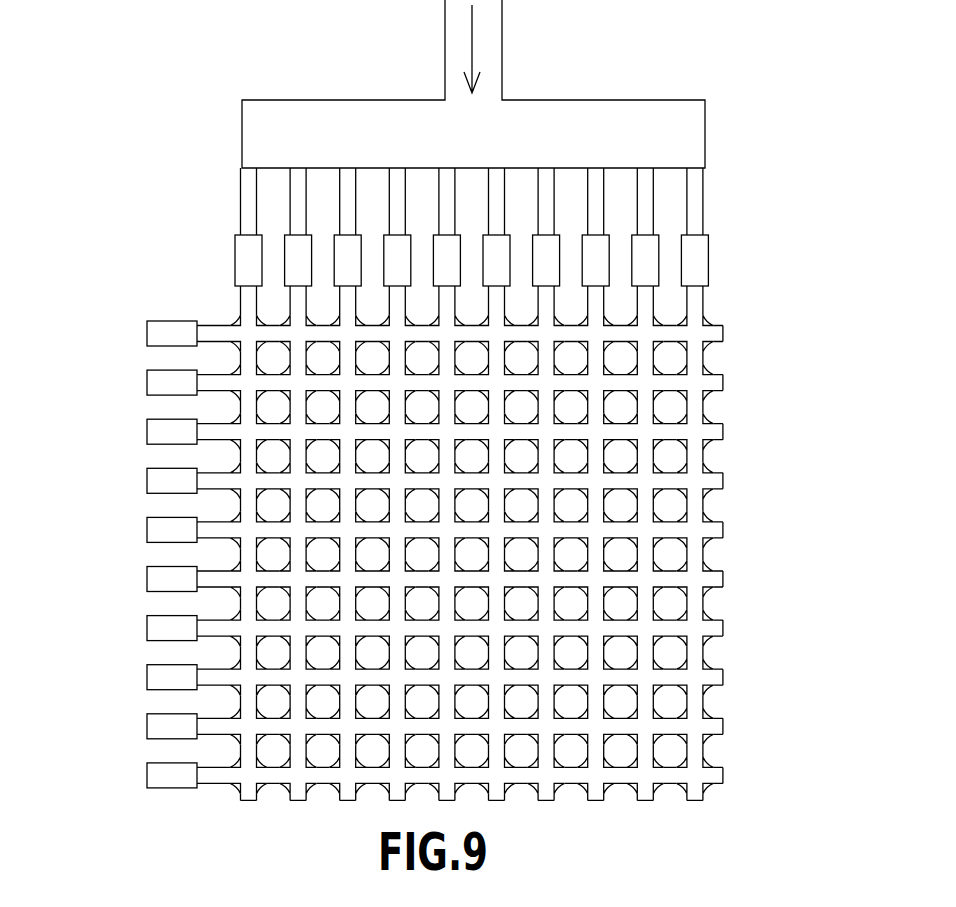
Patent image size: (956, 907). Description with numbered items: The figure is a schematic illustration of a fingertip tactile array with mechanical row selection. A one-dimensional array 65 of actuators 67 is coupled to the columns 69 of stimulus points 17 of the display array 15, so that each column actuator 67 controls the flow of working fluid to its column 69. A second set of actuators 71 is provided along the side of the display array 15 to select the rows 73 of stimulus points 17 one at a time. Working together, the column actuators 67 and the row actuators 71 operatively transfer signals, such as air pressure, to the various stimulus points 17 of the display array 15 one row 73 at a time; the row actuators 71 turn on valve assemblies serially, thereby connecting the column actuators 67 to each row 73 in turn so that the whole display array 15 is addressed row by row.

The display array 15 is at (758, 478).
The stimulus points 17 is at (638, 680).
The one-dimensional array of actuators 65 is at (783, 217).
The actuators 67 is at (345, 258).
The columns 69 is at (297, 303).
The second set of actuators 71 is at (147, 517).
The rows 73 is at (217, 430).